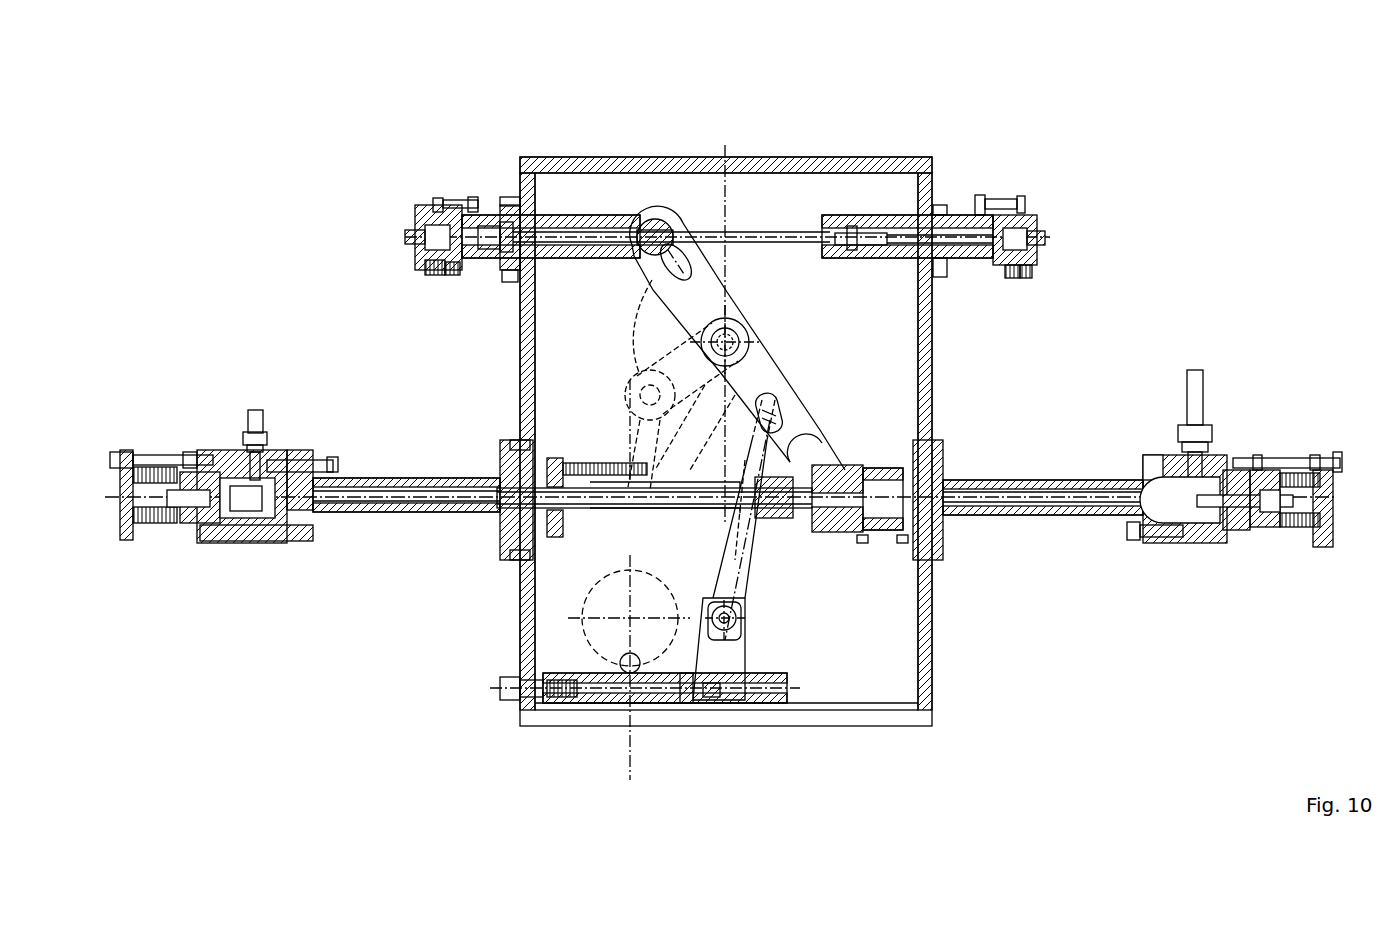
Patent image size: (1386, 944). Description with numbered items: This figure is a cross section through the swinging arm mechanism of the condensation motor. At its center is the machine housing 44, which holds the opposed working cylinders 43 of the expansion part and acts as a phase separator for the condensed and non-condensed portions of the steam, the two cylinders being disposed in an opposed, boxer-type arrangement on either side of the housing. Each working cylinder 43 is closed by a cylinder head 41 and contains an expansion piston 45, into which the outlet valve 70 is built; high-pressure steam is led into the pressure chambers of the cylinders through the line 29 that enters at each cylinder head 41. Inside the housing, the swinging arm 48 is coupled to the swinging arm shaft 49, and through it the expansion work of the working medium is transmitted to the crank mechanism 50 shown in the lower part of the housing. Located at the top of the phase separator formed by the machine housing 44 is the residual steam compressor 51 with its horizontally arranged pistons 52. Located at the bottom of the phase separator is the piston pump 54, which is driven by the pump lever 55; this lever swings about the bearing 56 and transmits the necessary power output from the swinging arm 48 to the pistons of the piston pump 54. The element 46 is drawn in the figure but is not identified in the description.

The line 29 is at (262, 412).
The cylinder head 41 is at (250, 520).
The working cylinder 43 is at (420, 525).
The machine housing 44 is at (570, 341).
The piston 45 is at (500, 535).
The link 46 is at (715, 406).
The swinging arm 48 is at (762, 375).
The swinging arm shaft 49 is at (732, 338).
The crank mechanism 50 is at (580, 628).
The residual steam compressor 51 is at (1045, 228).
The pistons of the piston pump 52 is at (888, 238).
The piston pump 54 is at (770, 685).
The pump lever 55 is at (740, 560).
The bearing 56 is at (730, 622).
The outlet valve 70 is at (497, 497).